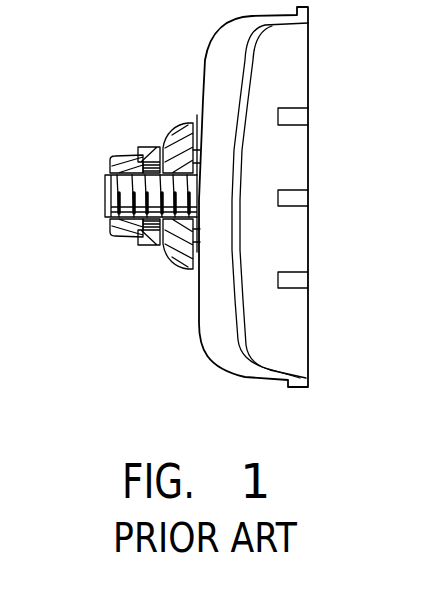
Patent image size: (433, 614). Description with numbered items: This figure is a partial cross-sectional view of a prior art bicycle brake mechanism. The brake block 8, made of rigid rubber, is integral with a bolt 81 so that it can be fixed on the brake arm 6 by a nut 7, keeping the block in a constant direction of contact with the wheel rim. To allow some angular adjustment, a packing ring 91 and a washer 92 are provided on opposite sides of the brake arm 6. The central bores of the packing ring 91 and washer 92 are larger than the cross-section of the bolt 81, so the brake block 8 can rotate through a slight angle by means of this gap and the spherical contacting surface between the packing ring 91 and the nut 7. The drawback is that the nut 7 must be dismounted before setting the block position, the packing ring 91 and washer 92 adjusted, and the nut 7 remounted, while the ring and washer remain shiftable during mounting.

The brake block 8 is at (311, 41).
The bolt 81 is at (102, 208).
The nut 7 is at (112, 161).
The packing ring 91 is at (150, 152).
The brake arm 6 is at (182, 133).
The washer 92 is at (193, 253).